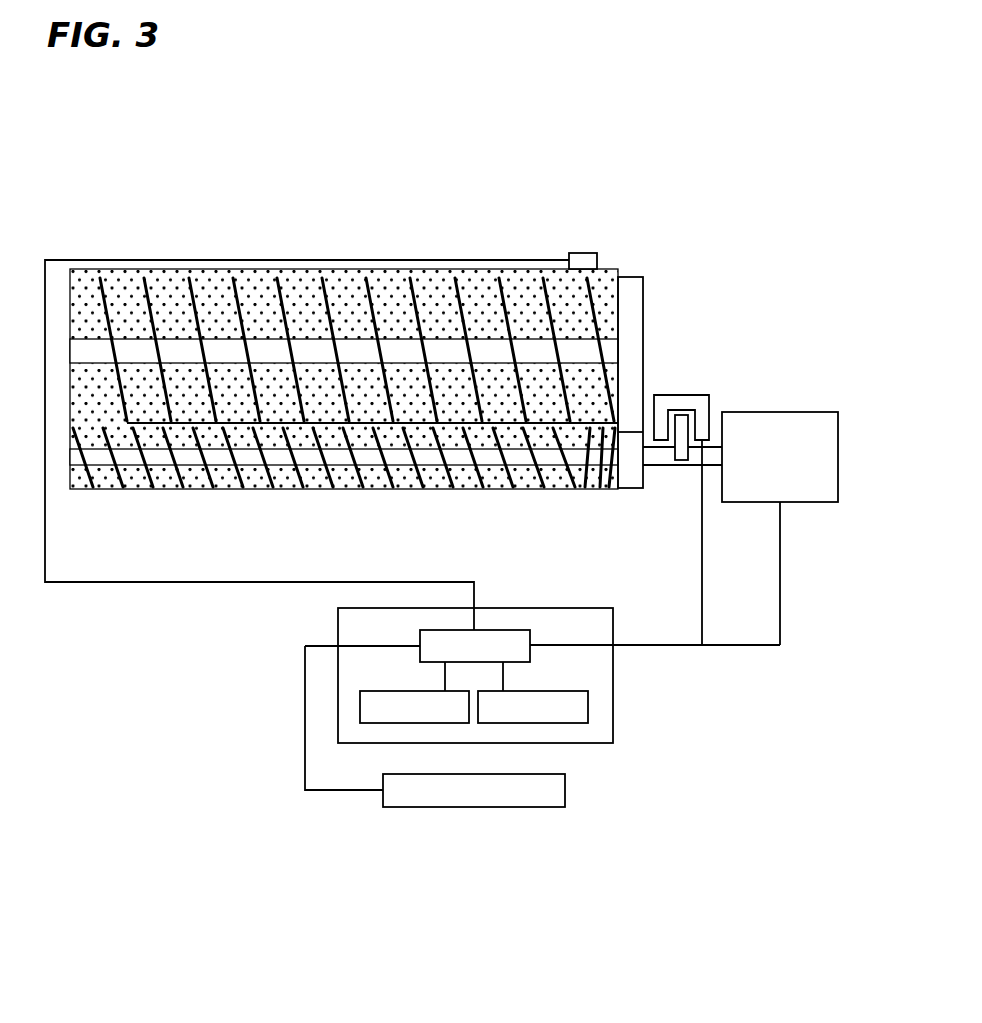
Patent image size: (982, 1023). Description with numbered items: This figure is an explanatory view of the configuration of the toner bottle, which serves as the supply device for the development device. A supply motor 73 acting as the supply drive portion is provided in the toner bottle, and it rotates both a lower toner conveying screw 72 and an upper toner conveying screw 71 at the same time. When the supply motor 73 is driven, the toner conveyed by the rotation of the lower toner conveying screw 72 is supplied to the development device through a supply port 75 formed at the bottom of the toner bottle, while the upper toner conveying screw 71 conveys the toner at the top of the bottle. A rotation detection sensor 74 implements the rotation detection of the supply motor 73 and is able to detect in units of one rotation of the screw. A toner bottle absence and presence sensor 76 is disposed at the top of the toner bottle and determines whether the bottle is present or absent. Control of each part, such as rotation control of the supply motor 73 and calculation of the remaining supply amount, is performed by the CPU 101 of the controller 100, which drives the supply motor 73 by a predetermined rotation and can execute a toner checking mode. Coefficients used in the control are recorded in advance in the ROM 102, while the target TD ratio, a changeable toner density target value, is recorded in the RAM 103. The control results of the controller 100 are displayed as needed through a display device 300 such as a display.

The upper toner conveying screw 71 is at (612, 350).
The lower toner conveying screw 72 is at (252, 457).
The supply motor 73 is at (803, 423).
The rotation detection sensor 74 is at (683, 403).
The supply port 75 is at (577, 489).
The toner bottle absence and presence sensor 76 is at (582, 257).
The controller 100 is at (612, 704).
The CPU 101 is at (508, 630).
The ROM 102 is at (553, 723).
The RAM 103 is at (360, 711).
The display device 300 is at (477, 807).